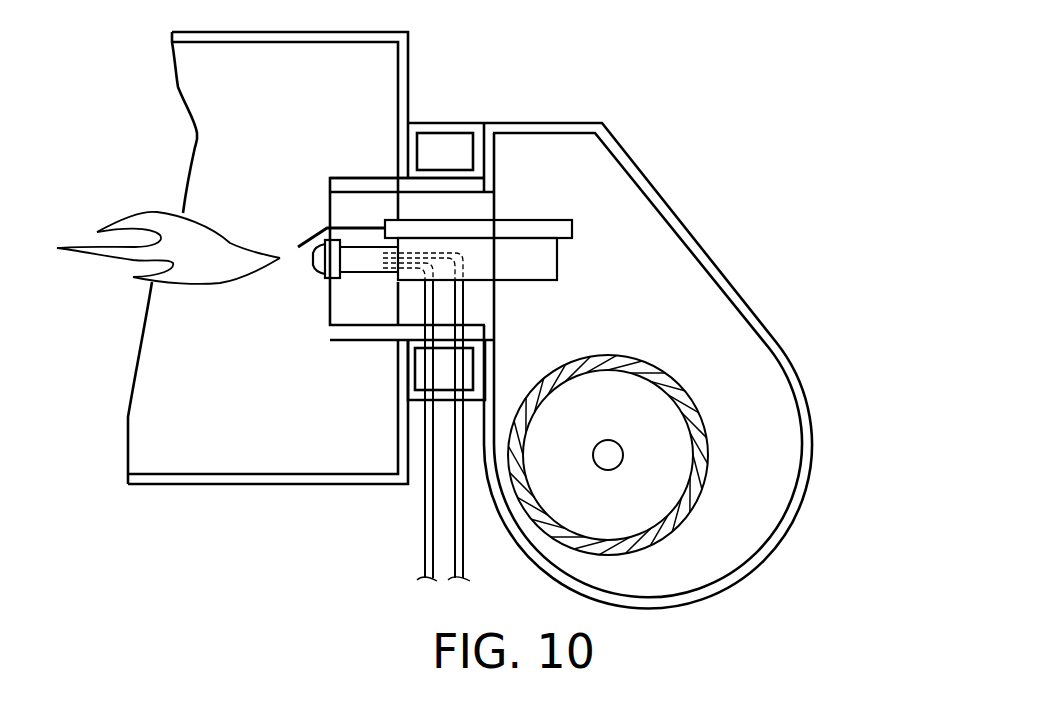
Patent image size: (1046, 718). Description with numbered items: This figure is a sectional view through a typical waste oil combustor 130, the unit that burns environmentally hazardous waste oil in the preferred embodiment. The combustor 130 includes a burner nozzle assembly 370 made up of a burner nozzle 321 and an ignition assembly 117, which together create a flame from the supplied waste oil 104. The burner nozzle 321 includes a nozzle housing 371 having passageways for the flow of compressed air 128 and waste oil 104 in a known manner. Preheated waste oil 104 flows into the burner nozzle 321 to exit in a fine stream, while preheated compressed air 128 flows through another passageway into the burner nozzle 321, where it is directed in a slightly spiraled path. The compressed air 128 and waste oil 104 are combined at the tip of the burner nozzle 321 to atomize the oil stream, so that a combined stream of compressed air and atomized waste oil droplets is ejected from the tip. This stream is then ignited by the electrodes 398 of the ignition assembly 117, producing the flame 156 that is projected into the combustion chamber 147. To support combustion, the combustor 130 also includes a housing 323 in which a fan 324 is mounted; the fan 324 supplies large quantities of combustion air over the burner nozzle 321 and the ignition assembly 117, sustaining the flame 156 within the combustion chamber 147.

The waste oil combustor 130 is at (571, 347).
The flame 156 is at (158, 211).
The electrodes 398 is at (313, 231).
The ignition assembly 117 is at (380, 215).
The burner nozzle assembly 370 is at (559, 257).
The nozzle housing 371 is at (540, 282).
The housing 323 is at (707, 256).
The fan 324 is at (632, 356).
The burner nozzle 321 is at (318, 266).
The combustion chamber 147 is at (202, 448).
The waste oil 104 is at (455, 522).
The compressed air 128 is at (426, 548).